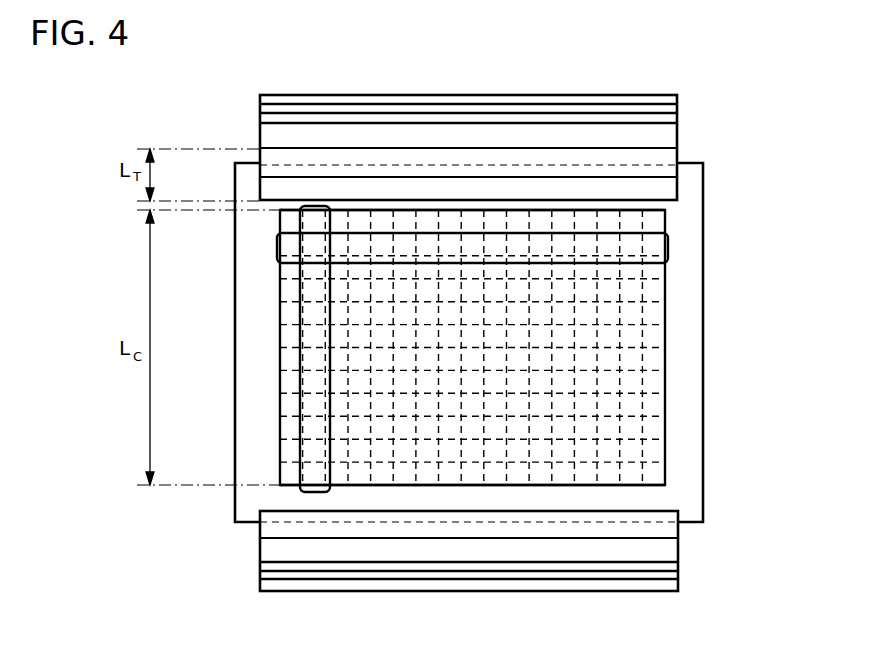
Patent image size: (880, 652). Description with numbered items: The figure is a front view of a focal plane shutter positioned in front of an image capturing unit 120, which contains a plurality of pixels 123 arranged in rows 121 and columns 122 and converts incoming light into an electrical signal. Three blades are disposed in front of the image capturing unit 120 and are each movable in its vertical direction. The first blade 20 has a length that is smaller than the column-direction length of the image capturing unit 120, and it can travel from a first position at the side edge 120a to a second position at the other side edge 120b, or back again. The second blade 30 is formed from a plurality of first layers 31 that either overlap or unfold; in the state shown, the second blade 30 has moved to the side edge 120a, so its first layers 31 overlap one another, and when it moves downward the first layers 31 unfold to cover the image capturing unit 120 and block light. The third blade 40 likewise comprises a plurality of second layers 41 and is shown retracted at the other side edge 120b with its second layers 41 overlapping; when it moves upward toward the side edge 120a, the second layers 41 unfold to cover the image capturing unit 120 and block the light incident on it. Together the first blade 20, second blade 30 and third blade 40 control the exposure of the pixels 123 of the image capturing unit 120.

The first blade 20 is at (667, 190).
The second blade 30 is at (497, 123).
The first layers 31 is at (610, 110).
The third blade 40 is at (497, 575).
The second layers 41 is at (580, 577).
The image capturing unit 120 is at (687, 422).
The side edge 120a is at (650, 208).
The other side edge 120b is at (627, 487).
The rows 121 is at (670, 252).
The columns 122 is at (305, 386).
The pixels 123 is at (625, 360).